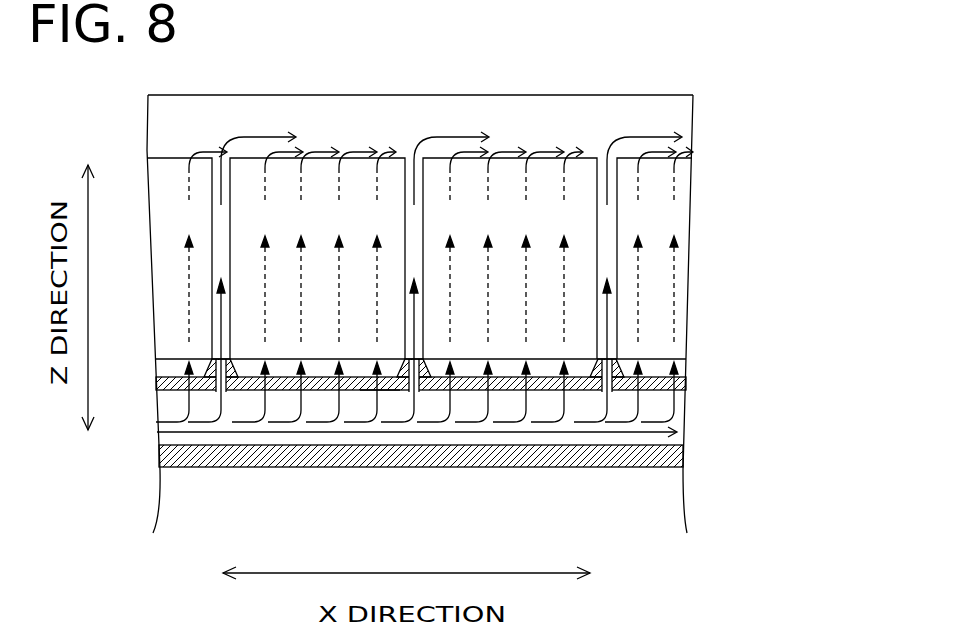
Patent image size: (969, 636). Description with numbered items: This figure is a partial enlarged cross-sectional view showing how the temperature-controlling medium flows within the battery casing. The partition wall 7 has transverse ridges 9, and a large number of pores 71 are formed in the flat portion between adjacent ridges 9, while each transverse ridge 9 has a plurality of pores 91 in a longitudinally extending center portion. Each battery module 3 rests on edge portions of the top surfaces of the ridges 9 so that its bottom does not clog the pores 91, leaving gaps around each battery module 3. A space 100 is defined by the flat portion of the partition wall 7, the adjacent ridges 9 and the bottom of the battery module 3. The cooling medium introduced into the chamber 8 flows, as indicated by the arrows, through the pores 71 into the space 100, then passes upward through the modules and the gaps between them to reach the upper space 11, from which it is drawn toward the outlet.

The battery module 3 is at (421, 233).
The partition wall 7 is at (308, 389).
The pores 71 is at (380, 391).
The chamber 8 is at (587, 423).
The transverse ridges 9 is at (622, 368).
The pores 91 is at (225, 365).
The space 100 is at (500, 370).
The upper space 11 is at (569, 142).